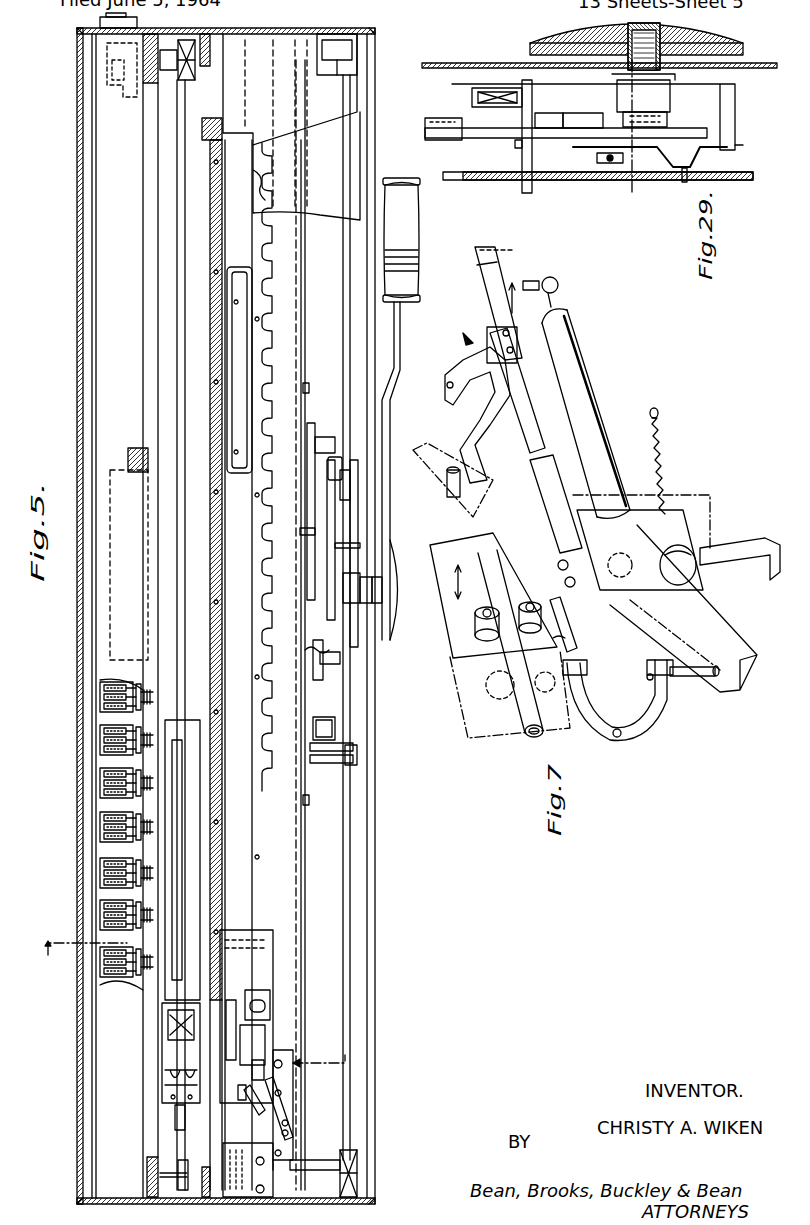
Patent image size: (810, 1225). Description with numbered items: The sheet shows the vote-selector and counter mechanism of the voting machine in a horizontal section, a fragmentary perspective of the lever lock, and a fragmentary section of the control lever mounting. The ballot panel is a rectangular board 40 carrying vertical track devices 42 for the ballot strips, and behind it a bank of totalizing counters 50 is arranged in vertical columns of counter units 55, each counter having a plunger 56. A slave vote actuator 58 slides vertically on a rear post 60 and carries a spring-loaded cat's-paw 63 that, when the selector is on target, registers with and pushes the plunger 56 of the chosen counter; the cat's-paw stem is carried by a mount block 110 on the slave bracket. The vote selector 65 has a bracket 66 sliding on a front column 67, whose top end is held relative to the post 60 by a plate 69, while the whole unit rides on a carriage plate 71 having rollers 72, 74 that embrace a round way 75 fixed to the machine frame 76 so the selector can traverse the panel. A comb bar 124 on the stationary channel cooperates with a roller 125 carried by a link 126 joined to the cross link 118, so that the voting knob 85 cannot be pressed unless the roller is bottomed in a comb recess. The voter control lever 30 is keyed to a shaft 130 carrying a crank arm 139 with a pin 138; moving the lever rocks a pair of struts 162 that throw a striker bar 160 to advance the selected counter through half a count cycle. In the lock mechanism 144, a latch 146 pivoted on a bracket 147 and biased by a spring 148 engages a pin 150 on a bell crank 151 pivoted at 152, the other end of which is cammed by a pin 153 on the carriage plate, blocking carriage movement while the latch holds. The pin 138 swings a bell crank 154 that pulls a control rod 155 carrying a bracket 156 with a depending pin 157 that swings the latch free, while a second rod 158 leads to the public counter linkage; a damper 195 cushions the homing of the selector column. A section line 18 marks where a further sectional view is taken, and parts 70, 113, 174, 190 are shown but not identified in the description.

In FIG. 5, the section line 18- 18 is at (192, 1004).
In FIG. 5, the voter control lever 30 is at (420, 222).
In FIG. 29, the voter control lever 30 is at (500, 48).
In FIG. 5, the rectangular board 40 is at (252, 280).
In FIG. 5, the vertical track devices 42 is at (222, 235).
In FIG. 5, the bank of totalizing counters 50 is at (88, 877).
In FIG. 5, the counter units 55 is at (100, 785).
In FIG. 5, the plunger 56 is at (152, 685).
In FIG. 5, the slave vote actuator 58 is at (148, 1074).
In FIG. 5, the post 60 is at (170, 1105).
In FIG. 5, the cat's-paw 63 is at (162, 1026).
In FIG. 5, the vote selector 65 is at (260, 1043).
In FIG. 5, the bracket 66 is at (241, 1102).
In FIG. 5, the front column 67 is at (252, 1097).
In FIG. 5, the plate 69 is at (166, 894).
In FIG. 5, the base block 70 is at (217, 1153).
In FIG. 7, the carriage plate 71 is at (455, 680).
In FIG. 7, the roller 72 is at (478, 615).
In FIG. 7, the roller 74 is at (530, 600).
In FIG. 5, the round way 75 is at (247, 358).
In FIG. 7, the round way 75 is at (527, 735).
In FIG. 5, the machine frame 76 is at (288, 333).
In FIG. 5, the voting knob 85 is at (293, 1092).
In FIG. 5, the mount block 110 is at (238, 968).
In FIG. 5, the cam block 113 is at (258, 1032).
In FIG. 5, the link 118 is at (288, 1103).
In FIG. 5, the comb bar 124 is at (270, 740).
In FIG. 5, the roller 125 is at (290, 1072).
In FIG. 5, the link 126 is at (290, 1122).
In FIG. 5, the shaft 130 is at (332, 600).
In FIG. 5, the pin 138 is at (300, 533).
In FIG. 7, the pin 138 is at (452, 498).
In FIG. 5, the crank arm 139 is at (302, 519).
In FIG. 29, the crank arm 139 is at (426, 131).
In FIG. 7, the crank arm 139 is at (424, 490).
In FIG. 7, the lock mechanism 144 is at (654, 737).
In FIG. 7, the latch 146 is at (742, 640).
In FIG. 7, the bracket 147 is at (742, 553).
In FIG. 7, the spring 148 is at (654, 490).
In FIG. 7, the pin 150 is at (690, 678).
In FIG. 7, the bell crank 151 is at (651, 745).
In FIG. 7, the pivot 152 is at (614, 738).
In FIG. 7, the pin 153 is at (562, 633).
In FIG. 7, the bell crank 154 is at (457, 440).
In FIG. 7, the control rod 155 is at (541, 514).
In FIG. 7, the bracket 156 is at (558, 492).
In FIG. 7, the pin 157 is at (650, 556).
In FIG. 7, the second rod 158 is at (492, 306).
In FIG. 5, the striker bar 160 is at (343, 858).
In FIG. 5, the struts 162 is at (309, 388).
In FIG. 5, the housing block 174 is at (211, 982).
In FIG. 5, the shaft 190 is at (175, 1176).
In FIG. 7, the damper 195 is at (590, 392).